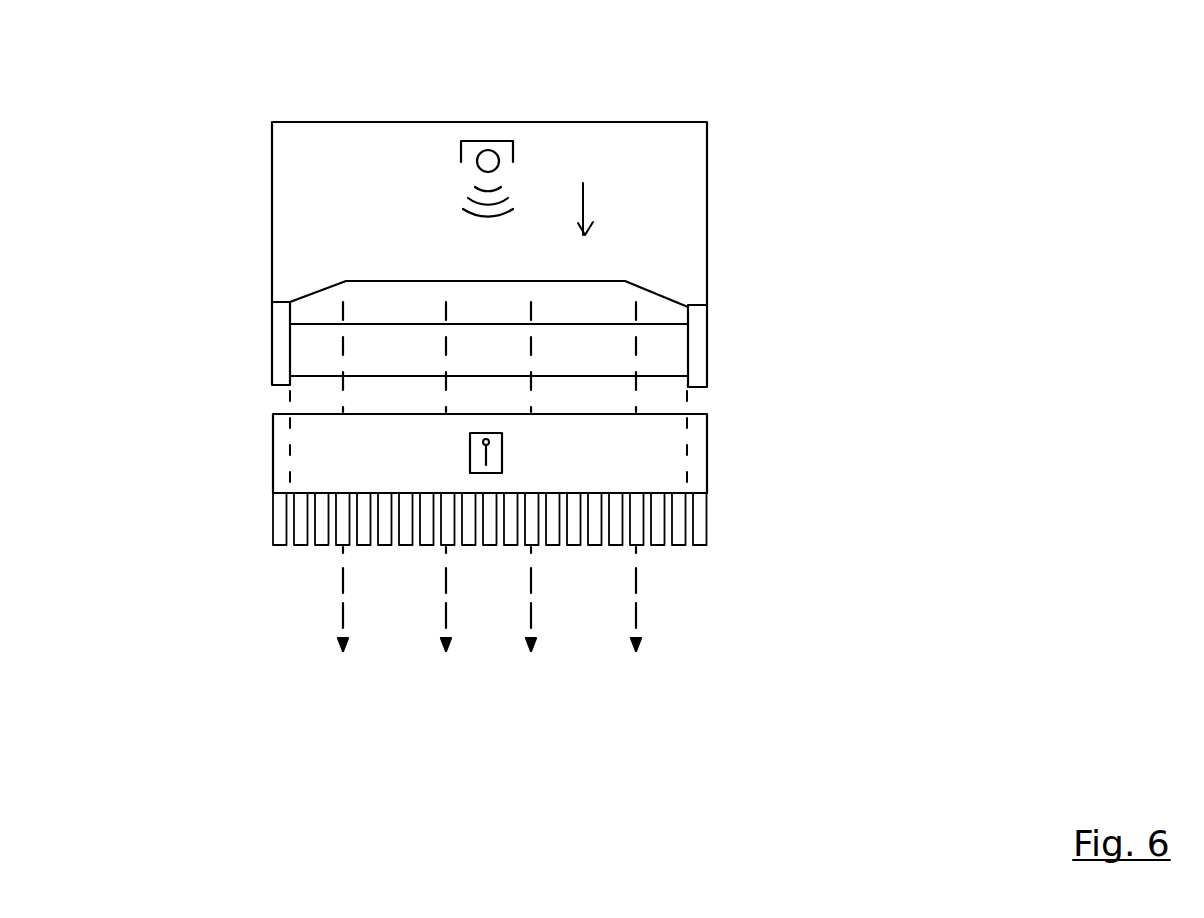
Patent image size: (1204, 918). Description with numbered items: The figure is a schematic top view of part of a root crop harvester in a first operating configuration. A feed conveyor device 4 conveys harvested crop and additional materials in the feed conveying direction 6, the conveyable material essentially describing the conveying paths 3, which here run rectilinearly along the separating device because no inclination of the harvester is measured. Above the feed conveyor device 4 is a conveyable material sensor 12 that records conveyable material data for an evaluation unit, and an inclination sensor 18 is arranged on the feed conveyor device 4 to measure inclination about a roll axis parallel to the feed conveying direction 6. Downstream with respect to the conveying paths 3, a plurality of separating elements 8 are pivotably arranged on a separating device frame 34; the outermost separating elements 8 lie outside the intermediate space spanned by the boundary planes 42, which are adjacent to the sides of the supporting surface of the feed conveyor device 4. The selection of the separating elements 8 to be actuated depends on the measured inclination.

The conveyable material sensor 12 is at (487, 143).
The feed conveying direction 6 is at (596, 207).
The feed conveyor device 4 is at (579, 321).
The boundary planes 42 is at (290, 453).
The separating device frame 34 is at (687, 467).
The inclination sensor 18 is at (478, 467).
The separating elements 8 is at (700, 547).
The conveying path 3 is at (342, 575).